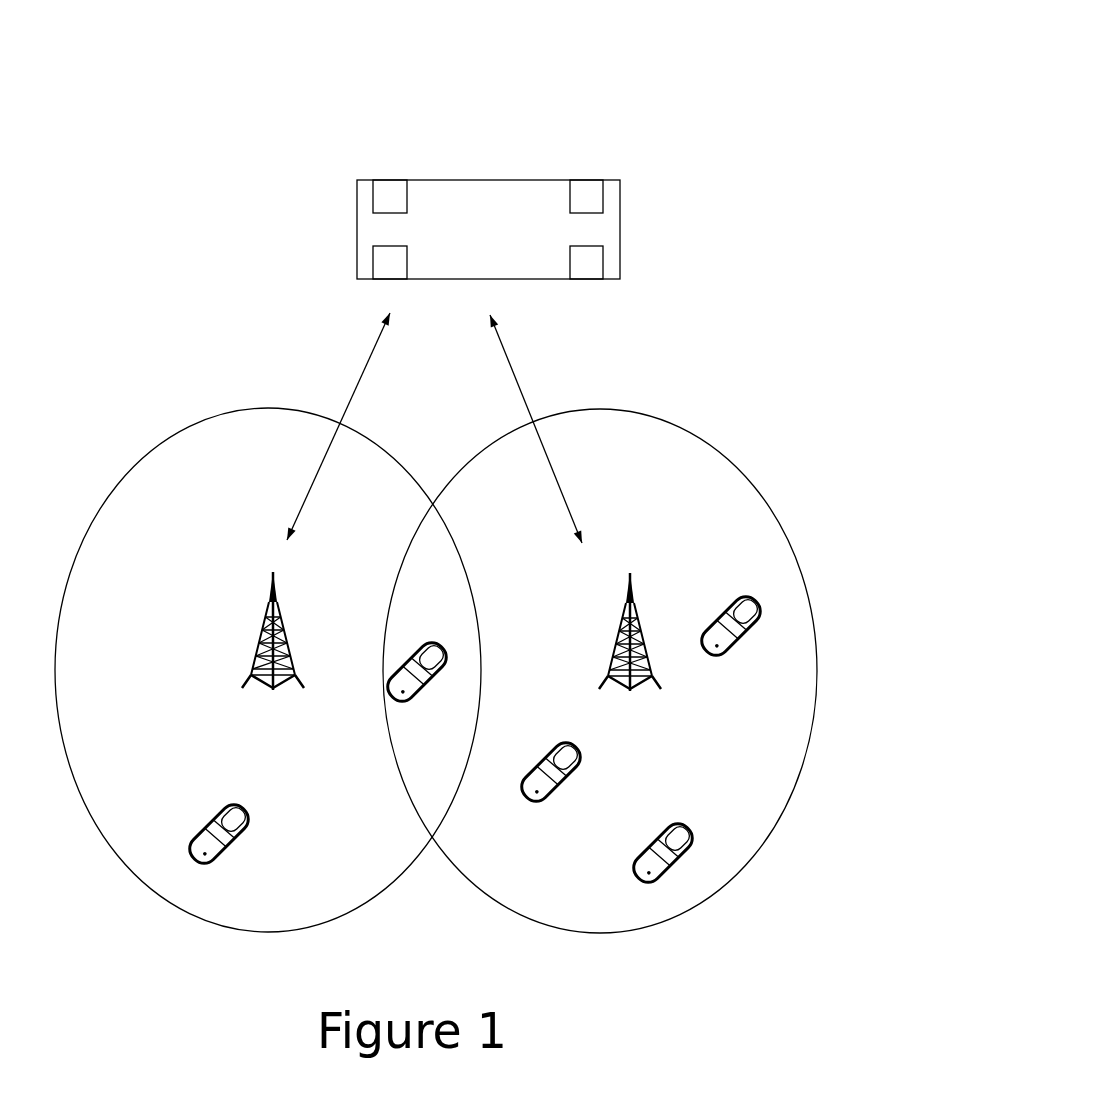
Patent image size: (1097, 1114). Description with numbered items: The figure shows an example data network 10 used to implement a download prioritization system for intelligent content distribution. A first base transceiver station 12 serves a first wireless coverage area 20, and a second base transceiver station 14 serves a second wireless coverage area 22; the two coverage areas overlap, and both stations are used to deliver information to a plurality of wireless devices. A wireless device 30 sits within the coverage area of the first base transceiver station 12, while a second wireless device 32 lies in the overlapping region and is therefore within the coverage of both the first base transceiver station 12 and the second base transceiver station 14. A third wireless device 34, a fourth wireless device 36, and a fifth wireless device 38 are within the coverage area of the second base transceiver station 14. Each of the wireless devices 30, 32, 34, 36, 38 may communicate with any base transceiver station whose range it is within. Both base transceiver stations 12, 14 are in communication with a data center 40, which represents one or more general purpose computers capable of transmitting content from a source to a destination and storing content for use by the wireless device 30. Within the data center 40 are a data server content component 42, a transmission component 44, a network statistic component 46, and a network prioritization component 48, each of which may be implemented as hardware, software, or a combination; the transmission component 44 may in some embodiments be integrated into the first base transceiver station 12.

The data network 10 is at (700, 105).
The first base transceiver station 12 is at (273, 693).
The second base transceiver station 14 is at (630, 697).
The first wireless coverage area 20 is at (133, 473).
The second wireless coverage area 22 is at (707, 448).
The wireless device 30 is at (186, 843).
The second wireless device 32 is at (408, 640).
The third wireless device 34 is at (570, 740).
The fourth wireless device 36 is at (637, 888).
The fifth wireless device 38 is at (713, 660).
The data center 40 is at (422, 179).
The data server content component 42 is at (357, 218).
The transmission component 44 is at (357, 253).
The network statistic component 46 is at (620, 212).
The network prioritization component 48 is at (620, 262).